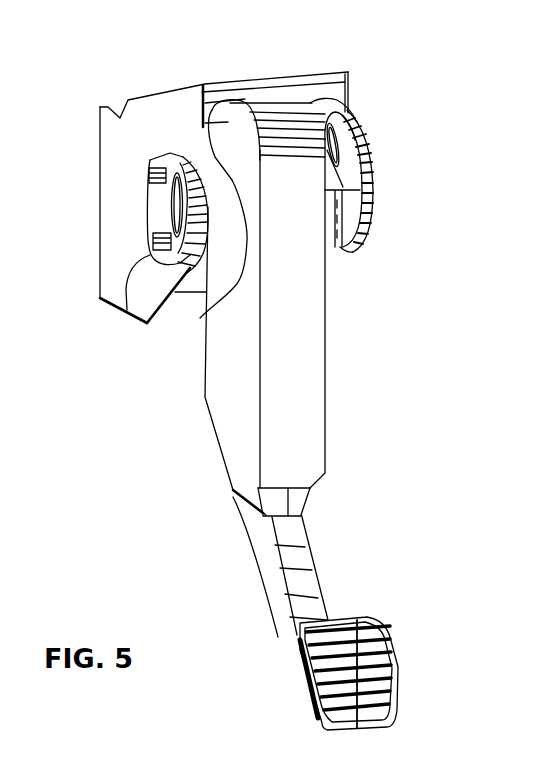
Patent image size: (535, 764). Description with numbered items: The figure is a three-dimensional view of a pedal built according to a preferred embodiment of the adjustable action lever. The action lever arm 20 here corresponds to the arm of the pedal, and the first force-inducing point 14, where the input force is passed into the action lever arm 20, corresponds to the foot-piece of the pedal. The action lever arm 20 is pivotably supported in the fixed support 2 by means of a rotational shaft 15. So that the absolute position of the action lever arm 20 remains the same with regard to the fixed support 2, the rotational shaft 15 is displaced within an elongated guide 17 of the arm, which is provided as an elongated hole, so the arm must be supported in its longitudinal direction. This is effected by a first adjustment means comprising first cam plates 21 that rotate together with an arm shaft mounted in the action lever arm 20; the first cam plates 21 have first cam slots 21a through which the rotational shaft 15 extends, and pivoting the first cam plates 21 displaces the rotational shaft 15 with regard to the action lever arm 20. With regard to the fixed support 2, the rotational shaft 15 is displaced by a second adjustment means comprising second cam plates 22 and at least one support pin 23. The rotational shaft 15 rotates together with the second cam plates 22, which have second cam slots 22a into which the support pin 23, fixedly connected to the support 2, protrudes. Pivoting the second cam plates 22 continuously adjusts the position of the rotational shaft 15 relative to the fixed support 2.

The fixed support 2 is at (108, 128).
The first force-inducing point 14 is at (382, 634).
The rotational shaft 15 is at (149, 173).
The elongated guide 17 is at (200, 318).
The action lever arm 20 is at (316, 378).
The first cam plates 21 is at (357, 117).
The first cam slots 21a is at (352, 132).
The second cam plates 22 is at (178, 153).
The second cam slots 22a is at (147, 212).
The support pin 23 is at (128, 306).